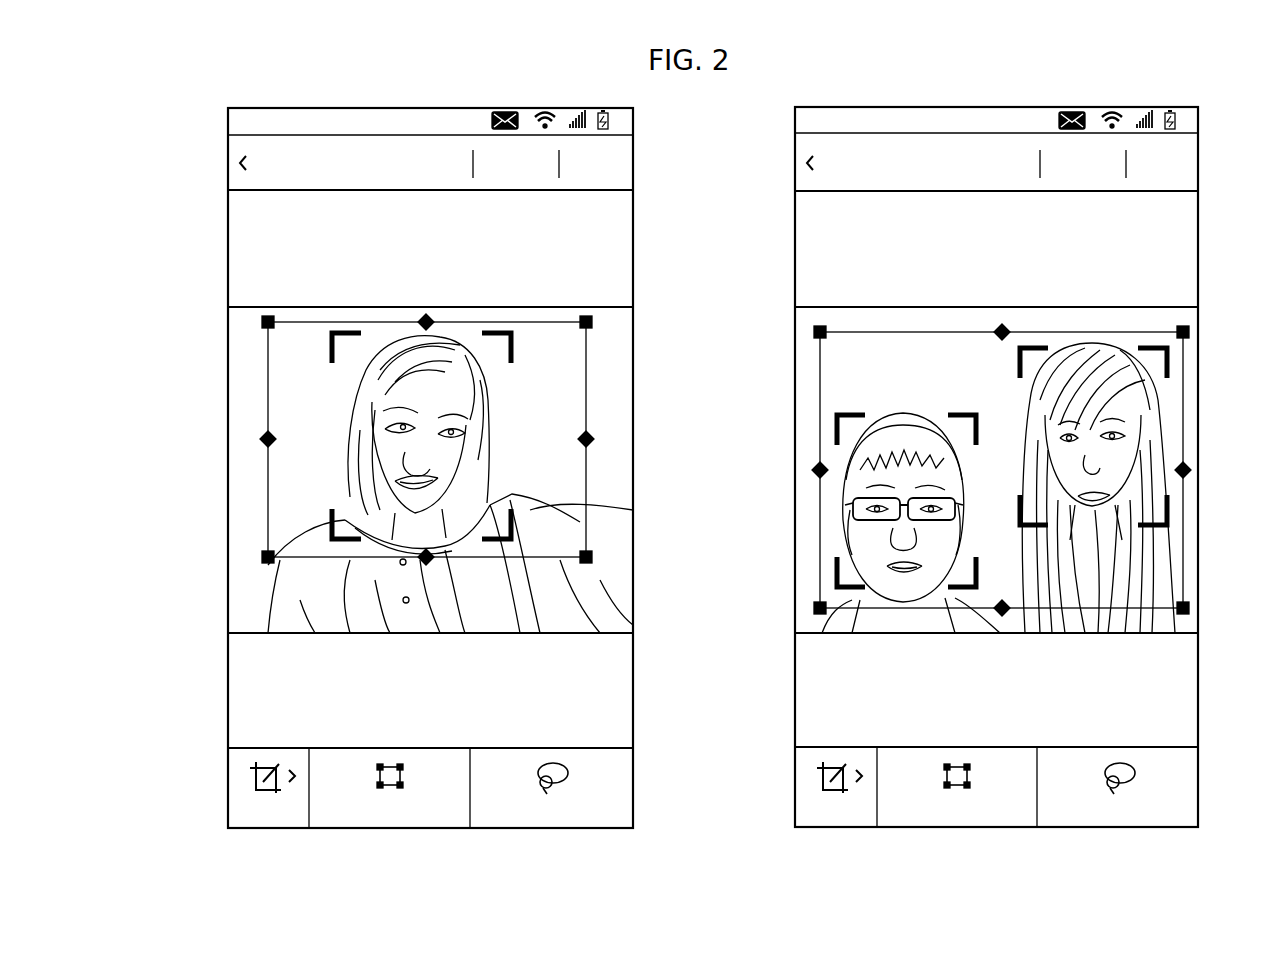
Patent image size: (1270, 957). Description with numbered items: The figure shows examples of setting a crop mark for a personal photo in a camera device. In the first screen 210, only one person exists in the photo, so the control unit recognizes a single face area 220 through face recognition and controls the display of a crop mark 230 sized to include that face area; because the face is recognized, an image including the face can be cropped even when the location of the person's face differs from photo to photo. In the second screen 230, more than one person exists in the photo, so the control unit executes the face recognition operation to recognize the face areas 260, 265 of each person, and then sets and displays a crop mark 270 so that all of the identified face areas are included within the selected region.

The screen 210 is at (636, 790).
The face area 220 is at (332, 362).
The crop mark 230 is at (268, 480).
The face area 260 is at (837, 432).
The face area 265 is at (1170, 363).
The crop mark 270 is at (820, 535).